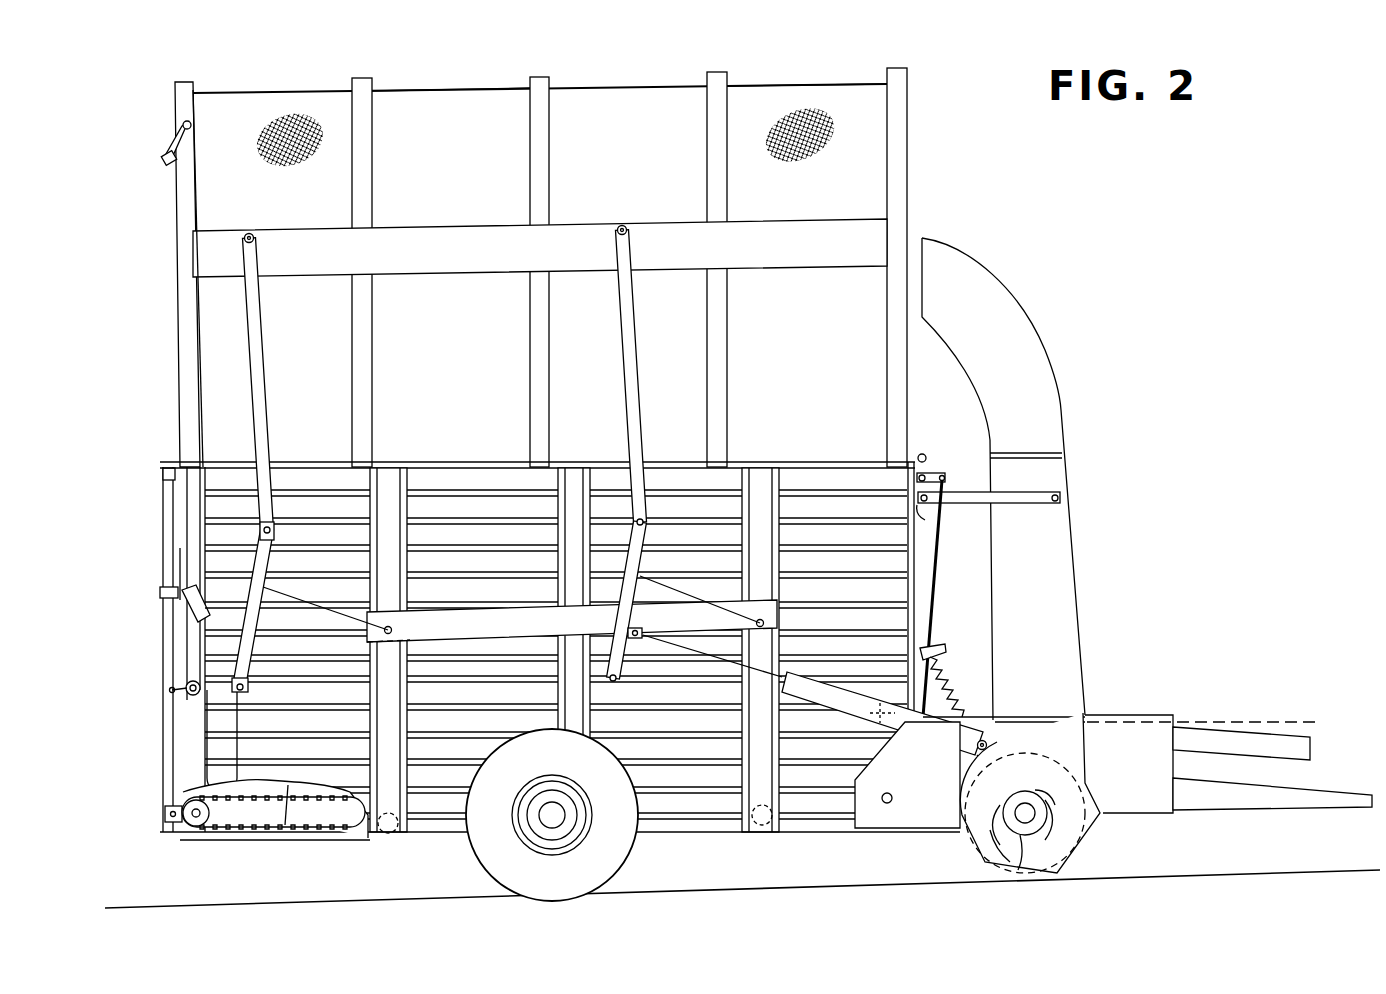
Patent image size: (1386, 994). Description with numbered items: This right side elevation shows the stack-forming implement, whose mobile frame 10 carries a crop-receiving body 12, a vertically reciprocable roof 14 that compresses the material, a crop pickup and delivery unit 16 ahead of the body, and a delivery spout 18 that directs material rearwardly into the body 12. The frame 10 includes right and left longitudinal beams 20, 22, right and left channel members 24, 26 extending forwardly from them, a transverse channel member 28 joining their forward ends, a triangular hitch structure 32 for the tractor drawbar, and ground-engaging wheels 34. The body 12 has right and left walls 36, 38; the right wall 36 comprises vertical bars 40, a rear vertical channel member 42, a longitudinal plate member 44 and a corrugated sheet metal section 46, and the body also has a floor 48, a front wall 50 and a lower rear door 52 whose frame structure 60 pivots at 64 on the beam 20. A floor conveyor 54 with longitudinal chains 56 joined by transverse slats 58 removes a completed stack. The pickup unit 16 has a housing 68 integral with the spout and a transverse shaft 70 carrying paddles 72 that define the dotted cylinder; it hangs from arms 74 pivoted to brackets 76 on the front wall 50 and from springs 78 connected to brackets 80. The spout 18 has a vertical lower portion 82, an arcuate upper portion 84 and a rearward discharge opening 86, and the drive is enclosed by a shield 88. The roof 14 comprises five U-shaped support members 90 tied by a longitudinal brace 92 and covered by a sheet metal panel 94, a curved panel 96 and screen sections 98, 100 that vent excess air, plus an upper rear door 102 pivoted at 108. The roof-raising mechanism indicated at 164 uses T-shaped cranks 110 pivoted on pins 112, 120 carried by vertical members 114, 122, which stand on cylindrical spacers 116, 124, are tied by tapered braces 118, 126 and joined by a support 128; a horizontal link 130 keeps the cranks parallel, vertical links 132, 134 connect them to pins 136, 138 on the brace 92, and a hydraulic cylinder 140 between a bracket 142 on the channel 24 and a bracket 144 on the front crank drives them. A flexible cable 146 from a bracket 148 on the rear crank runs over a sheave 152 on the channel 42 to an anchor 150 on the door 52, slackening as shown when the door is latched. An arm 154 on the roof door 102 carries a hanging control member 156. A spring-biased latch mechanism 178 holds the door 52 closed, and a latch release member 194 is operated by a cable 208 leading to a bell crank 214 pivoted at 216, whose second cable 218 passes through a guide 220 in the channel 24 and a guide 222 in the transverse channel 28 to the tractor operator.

The mobile frame 10 is at (825, 845).
The crop-receiving body 12 is at (928, 442).
The roof 14 is at (925, 143).
The material pickup and delivery unit 16 is at (1130, 855).
The material delivery spout 18 is at (1083, 523).
The right longitudinal beam 20 is at (660, 833).
The left longitudinal beam 22 is at (268, 832).
The right channel member 24 is at (1158, 808).
The left channel member 26 is at (1088, 730).
The transverse channel member 28 is at (1180, 722).
The triangular hitch structure 32 is at (1290, 795).
The ground-engaging wheels 34 is at (485, 865).
The right wall 36 is at (695, 775).
The left wall 38 is at (288, 812).
The vertical bars 40 is at (560, 725).
The vertical channel member 42 is at (188, 497).
The longitudinal plate member 44 is at (490, 462).
The corrugated sheet metal section 46 is at (445, 485).
The horizontal floor 48 is at (235, 815).
The front wall 50 is at (930, 607).
The rear door 52 is at (163, 645).
The floor conveyor 54 is at (360, 832).
The conveyor sprocket 56 is at (205, 825).
The transverse slats 58 is at (240, 785).
The door frame structure 60 is at (172, 668).
The door pivot 64 is at (170, 820).
The pickup unit housing 68 is at (1090, 840).
The transverse shaft 70 is at (1015, 813).
The crop pickup and propelling paddles 72 is at (1042, 808).
The fore-and-aft arms 74 is at (1018, 503).
The arm brackets 76 is at (925, 515).
The springs 78 is at (950, 700).
The spring brackets 80 is at (935, 650).
The lower spout portion 82 is at (1068, 608).
The arcuate upper spout portion 84 is at (1028, 355).
The discharge opening 86 is at (915, 250).
The sheet metal shield 88 is at (1300, 746).
The U-shaped support members 90 is at (355, 80).
The longitudinal brace 92 is at (795, 228).
The rectangular sheet metal panel 94 is at (490, 275).
The curved sheet metal panel 96 is at (450, 95).
The screen section 98 is at (790, 90).
The screen section 100 is at (268, 98).
The roof rear door 102 is at (165, 320).
The roof door pivot 108 is at (165, 160).
The T-shaped crank members 110 is at (345, 590).
The front pin 112 is at (768, 620).
The front vertical member 114 is at (770, 660).
The cylindrical spacer 116 is at (760, 826).
The tapered brace 118 is at (772, 534).
The rear pin 120 is at (393, 630).
The rear vertical member 122 is at (393, 698).
The second cylindrical spacer 124 is at (392, 835).
The second tapered brace 126 is at (393, 541).
The support 128 is at (535, 608).
The horizontal link 130 is at (495, 680).
The front vertical link 132 is at (638, 340).
The rear vertical link 134 is at (262, 352).
The front pin 136 is at (623, 226).
The rear pin 138 is at (252, 232).
The hydraulic cylinder 140 is at (850, 705).
The cylinder bracket 142 is at (968, 765).
The crank bracket 144 is at (633, 645).
The flexible cable 146 is at (240, 735).
The crank bracket 148 is at (240, 670).
The anchor 150 is at (185, 690).
The sheave 152 is at (190, 696).
The arm 154 is at (175, 142).
The control member 156 is at (198, 207).
The tailgate hinge 164 is at (225, 455).
The latch mechanism 178 is at (158, 581).
The latch release member 194 is at (195, 612).
The flexible cable 208 is at (272, 515).
The bell crank 214 is at (926, 460).
The bell crank pivot 216 is at (926, 478).
The second cable 218 is at (932, 575).
The guide 220 is at (905, 722).
The guide 222 is at (1172, 720).